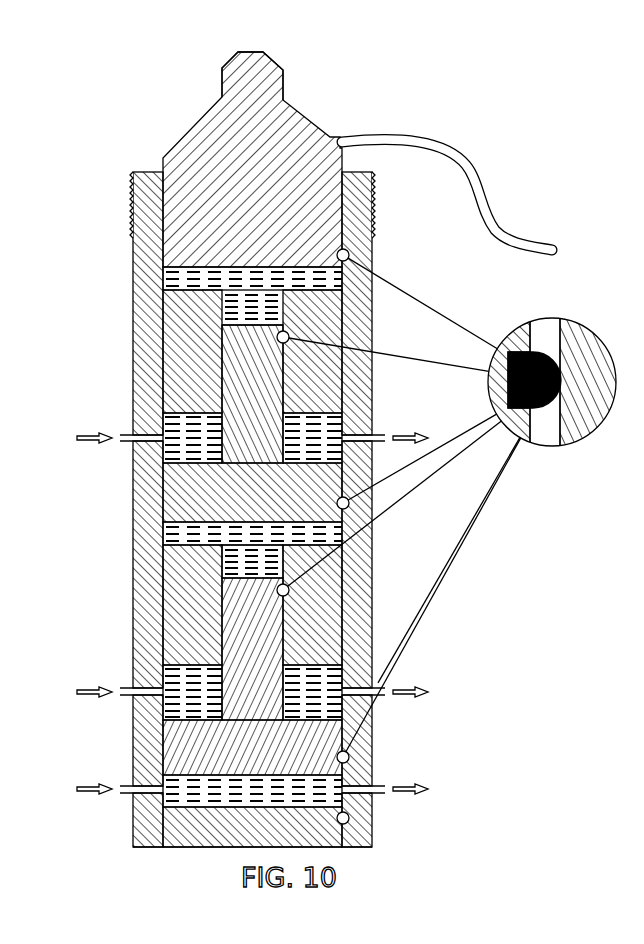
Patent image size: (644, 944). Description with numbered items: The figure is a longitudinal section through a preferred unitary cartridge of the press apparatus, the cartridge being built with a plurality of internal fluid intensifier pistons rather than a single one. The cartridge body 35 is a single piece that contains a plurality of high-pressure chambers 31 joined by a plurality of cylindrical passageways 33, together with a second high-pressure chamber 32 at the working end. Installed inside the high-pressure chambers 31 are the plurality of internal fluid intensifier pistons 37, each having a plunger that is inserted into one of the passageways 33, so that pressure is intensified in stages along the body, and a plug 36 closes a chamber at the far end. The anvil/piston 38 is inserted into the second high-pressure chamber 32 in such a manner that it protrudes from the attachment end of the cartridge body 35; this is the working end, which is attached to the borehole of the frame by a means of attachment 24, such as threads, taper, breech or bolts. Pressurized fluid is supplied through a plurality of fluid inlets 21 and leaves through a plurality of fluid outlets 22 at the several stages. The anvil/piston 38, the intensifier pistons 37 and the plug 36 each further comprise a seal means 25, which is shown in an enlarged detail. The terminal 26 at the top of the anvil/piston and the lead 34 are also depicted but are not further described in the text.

The pressure fluid inlet 21 is at (157, 788).
The pressure fluid outlet 22 is at (373, 432).
The means of attachment 24 is at (373, 217).
The seal means 25 is at (561, 402).
The terminal 26 is at (258, 52).
The high-pressure chamber 31 is at (257, 520).
The second high-pressure chamber 32 is at (163, 273).
The cylindrical passageway 33 is at (284, 294).
The lead wire 34 is at (507, 238).
The cartridge body 35 is at (373, 193).
The plug 36 is at (152, 847).
The internal fluid intensifier piston 37 is at (242, 373).
The anvil/piston 38 is at (304, 133).